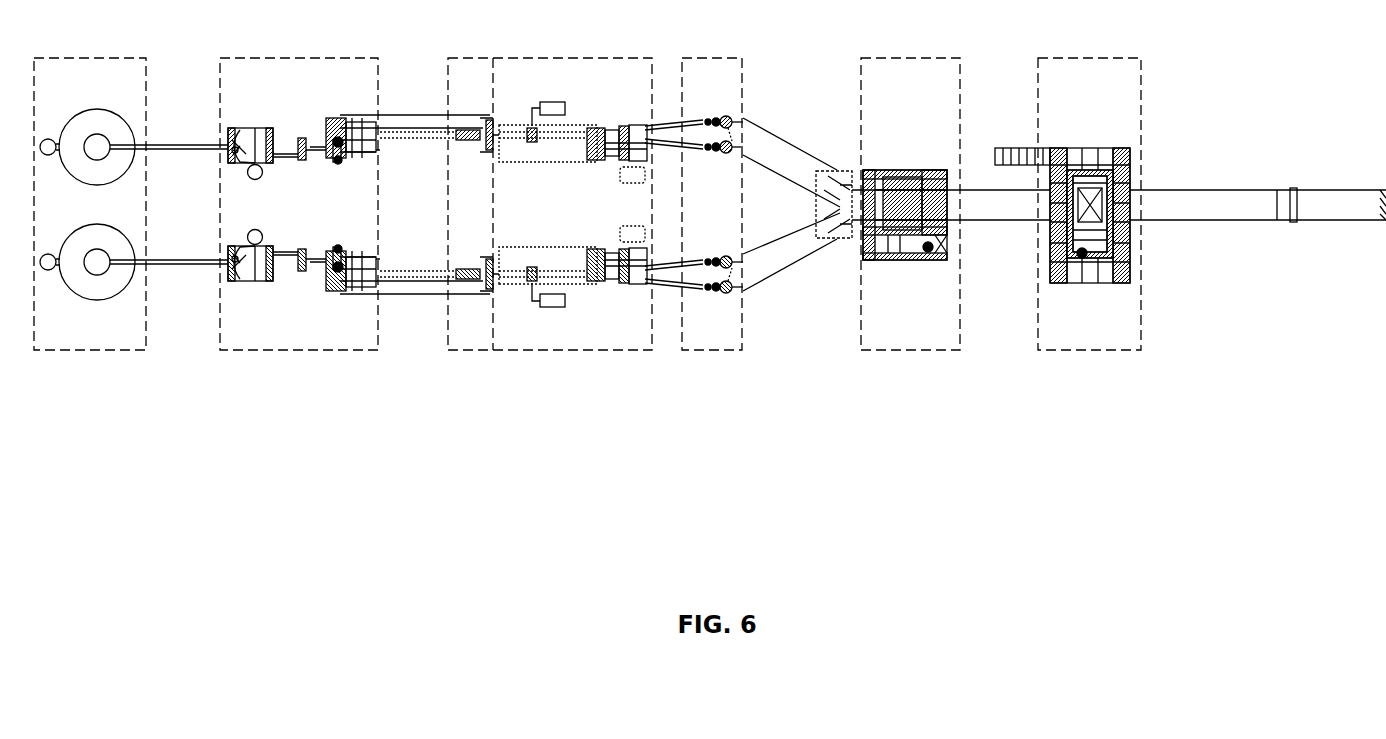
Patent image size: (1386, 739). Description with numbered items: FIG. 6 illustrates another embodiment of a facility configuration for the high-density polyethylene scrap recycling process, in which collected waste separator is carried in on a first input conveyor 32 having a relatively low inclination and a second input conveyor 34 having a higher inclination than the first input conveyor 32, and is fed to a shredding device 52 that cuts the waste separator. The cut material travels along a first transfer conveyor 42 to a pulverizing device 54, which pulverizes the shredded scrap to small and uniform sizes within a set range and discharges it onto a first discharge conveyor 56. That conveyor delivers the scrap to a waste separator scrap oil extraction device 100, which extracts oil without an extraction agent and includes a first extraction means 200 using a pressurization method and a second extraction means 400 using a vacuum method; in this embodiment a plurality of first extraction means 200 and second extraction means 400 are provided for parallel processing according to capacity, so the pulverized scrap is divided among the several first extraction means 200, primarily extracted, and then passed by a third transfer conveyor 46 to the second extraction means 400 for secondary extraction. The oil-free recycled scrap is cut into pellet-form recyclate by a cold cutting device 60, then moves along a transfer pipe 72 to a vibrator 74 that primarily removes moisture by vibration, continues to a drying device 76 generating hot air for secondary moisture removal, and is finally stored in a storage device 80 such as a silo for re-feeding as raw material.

The first input conveyor 32 is at (1348, 195).
The second input conveyor 34 is at (1210, 195).
The first transfer conveyor 42 is at (1002, 215).
The third transfer conveyor 46 is at (665, 124).
The shredding device 52 is at (1086, 290).
The pulverizing device 54 is at (893, 276).
The first discharge conveyor 56 is at (782, 150).
The cold cutting device 60 is at (470, 294).
The transfer pipe 72 is at (402, 114).
The vibrator 74 is at (330, 294).
The drying device 76 is at (254, 294).
The storage device 80 is at (93, 312).
The waste separator scrap oil extraction device 100 is at (575, 425).
The first extraction means 200 is at (709, 295).
The second extraction means 400 is at (585, 295).